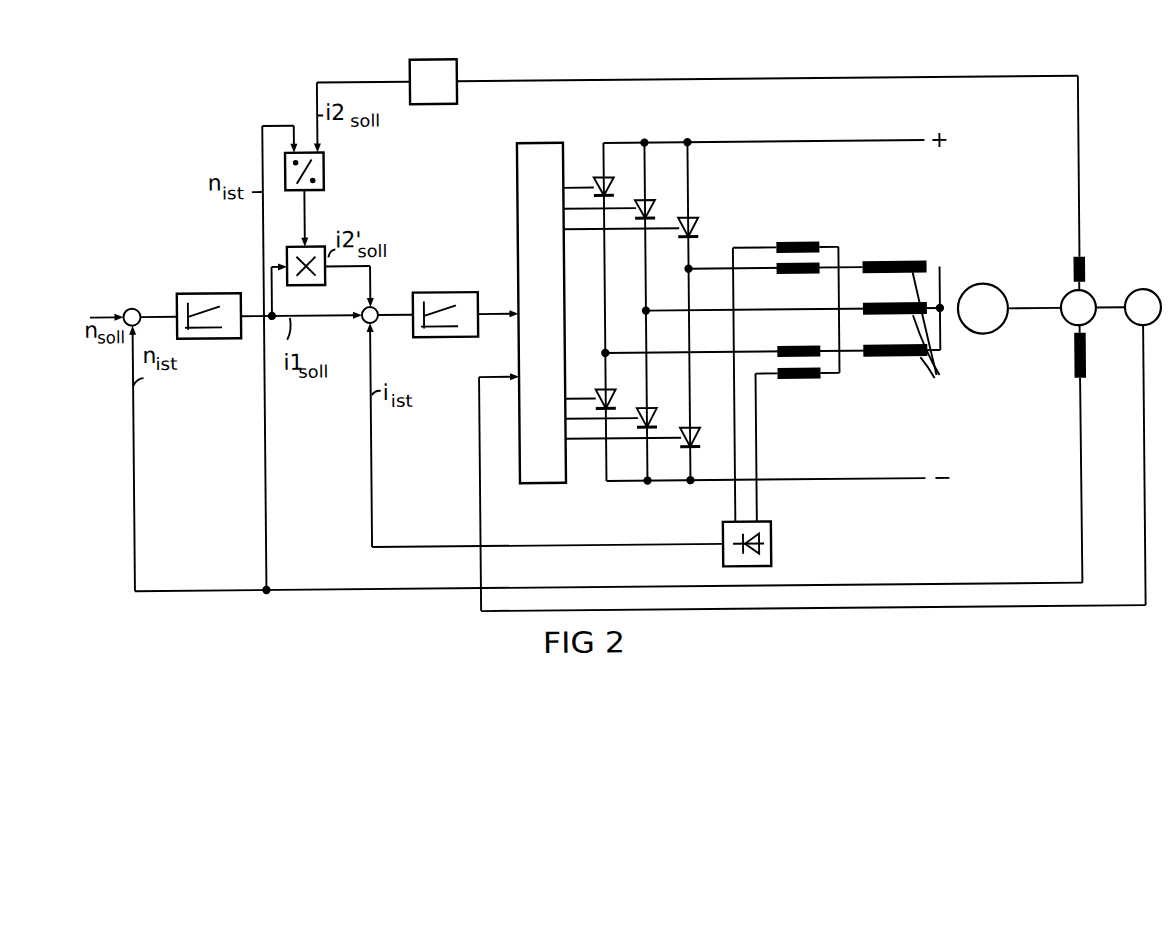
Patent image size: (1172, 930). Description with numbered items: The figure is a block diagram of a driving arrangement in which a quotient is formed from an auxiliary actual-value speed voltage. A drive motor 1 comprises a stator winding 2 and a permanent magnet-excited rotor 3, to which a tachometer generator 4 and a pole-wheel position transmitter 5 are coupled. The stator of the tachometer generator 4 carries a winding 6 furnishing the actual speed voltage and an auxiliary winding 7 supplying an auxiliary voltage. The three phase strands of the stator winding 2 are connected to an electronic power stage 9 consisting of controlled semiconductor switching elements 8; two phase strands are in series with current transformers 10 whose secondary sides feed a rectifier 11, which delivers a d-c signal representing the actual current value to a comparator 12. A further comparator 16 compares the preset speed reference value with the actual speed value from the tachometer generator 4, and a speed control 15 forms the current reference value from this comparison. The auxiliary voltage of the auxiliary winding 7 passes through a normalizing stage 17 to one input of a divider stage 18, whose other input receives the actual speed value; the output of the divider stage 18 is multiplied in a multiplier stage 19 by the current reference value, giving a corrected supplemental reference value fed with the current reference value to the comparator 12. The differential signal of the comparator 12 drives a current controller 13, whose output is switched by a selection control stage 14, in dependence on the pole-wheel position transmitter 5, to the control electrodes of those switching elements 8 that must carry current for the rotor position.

The drive motor 1 is at (946, 219).
The stator winding 2 is at (926, 337).
The permanent magnet-excited rotor 3 is at (983, 337).
The tachometer generator 4 is at (1063, 327).
The pole-wheel position transmitter 5 is at (1130, 330).
The winding 6 is at (1085, 366).
The auxiliary winding 7 is at (1085, 272).
The controlled semiconductor switching elements 8 is at (615, 184).
The electronic power stage 9 is at (617, 296).
The current transformers 10 is at (797, 347).
The rectifier 11 is at (767, 524).
The comparator 12 is at (376, 319).
The current controller 13 is at (441, 298).
The selection control stage 14 is at (538, 150).
The speed control 15 is at (206, 297).
The further comparator 16 is at (131, 301).
The normalizing stage 17 is at (433, 63).
The divider stage 18 is at (325, 166).
The multiplier stage 19 is at (289, 246).